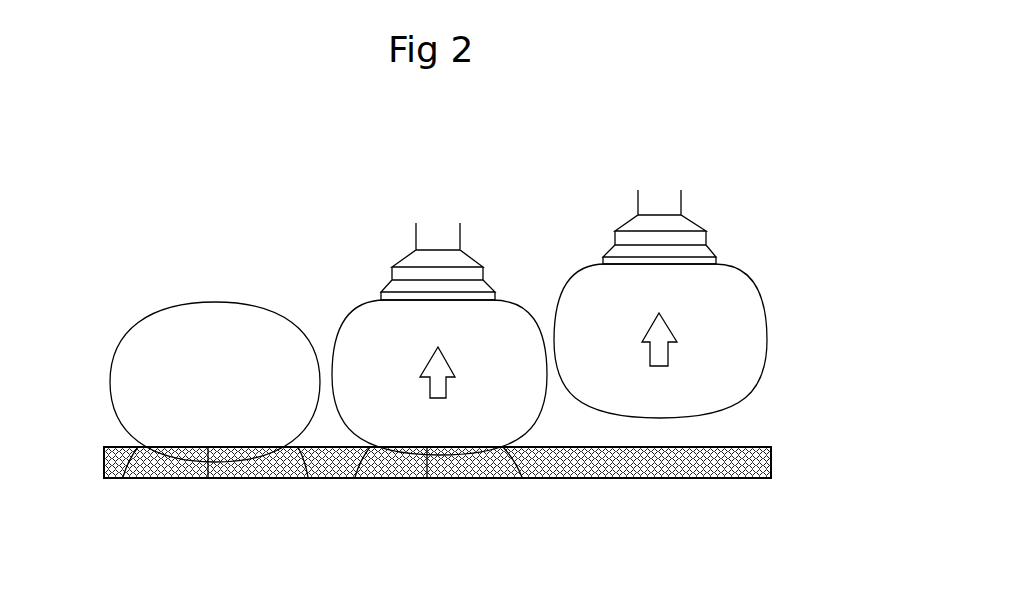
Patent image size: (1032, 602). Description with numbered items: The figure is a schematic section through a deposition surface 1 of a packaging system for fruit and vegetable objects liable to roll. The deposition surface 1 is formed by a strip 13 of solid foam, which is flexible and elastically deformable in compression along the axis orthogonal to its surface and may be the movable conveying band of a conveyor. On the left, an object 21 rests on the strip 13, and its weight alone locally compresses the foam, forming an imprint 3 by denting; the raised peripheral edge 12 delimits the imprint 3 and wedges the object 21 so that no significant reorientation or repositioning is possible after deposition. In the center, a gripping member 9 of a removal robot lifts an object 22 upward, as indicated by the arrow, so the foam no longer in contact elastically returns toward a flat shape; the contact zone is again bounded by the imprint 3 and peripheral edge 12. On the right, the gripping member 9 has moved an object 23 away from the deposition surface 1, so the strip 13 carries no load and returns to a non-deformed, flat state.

The deposition surface 1 is at (494, 419).
The imprint 3 is at (208, 477).
The gripping member 9 is at (437, 232).
The peripheral edge 12 is at (123, 477).
The strip of foam 13 is at (749, 447).
The object 21 is at (197, 315).
The object 22 is at (372, 315).
The object 23 is at (737, 285).